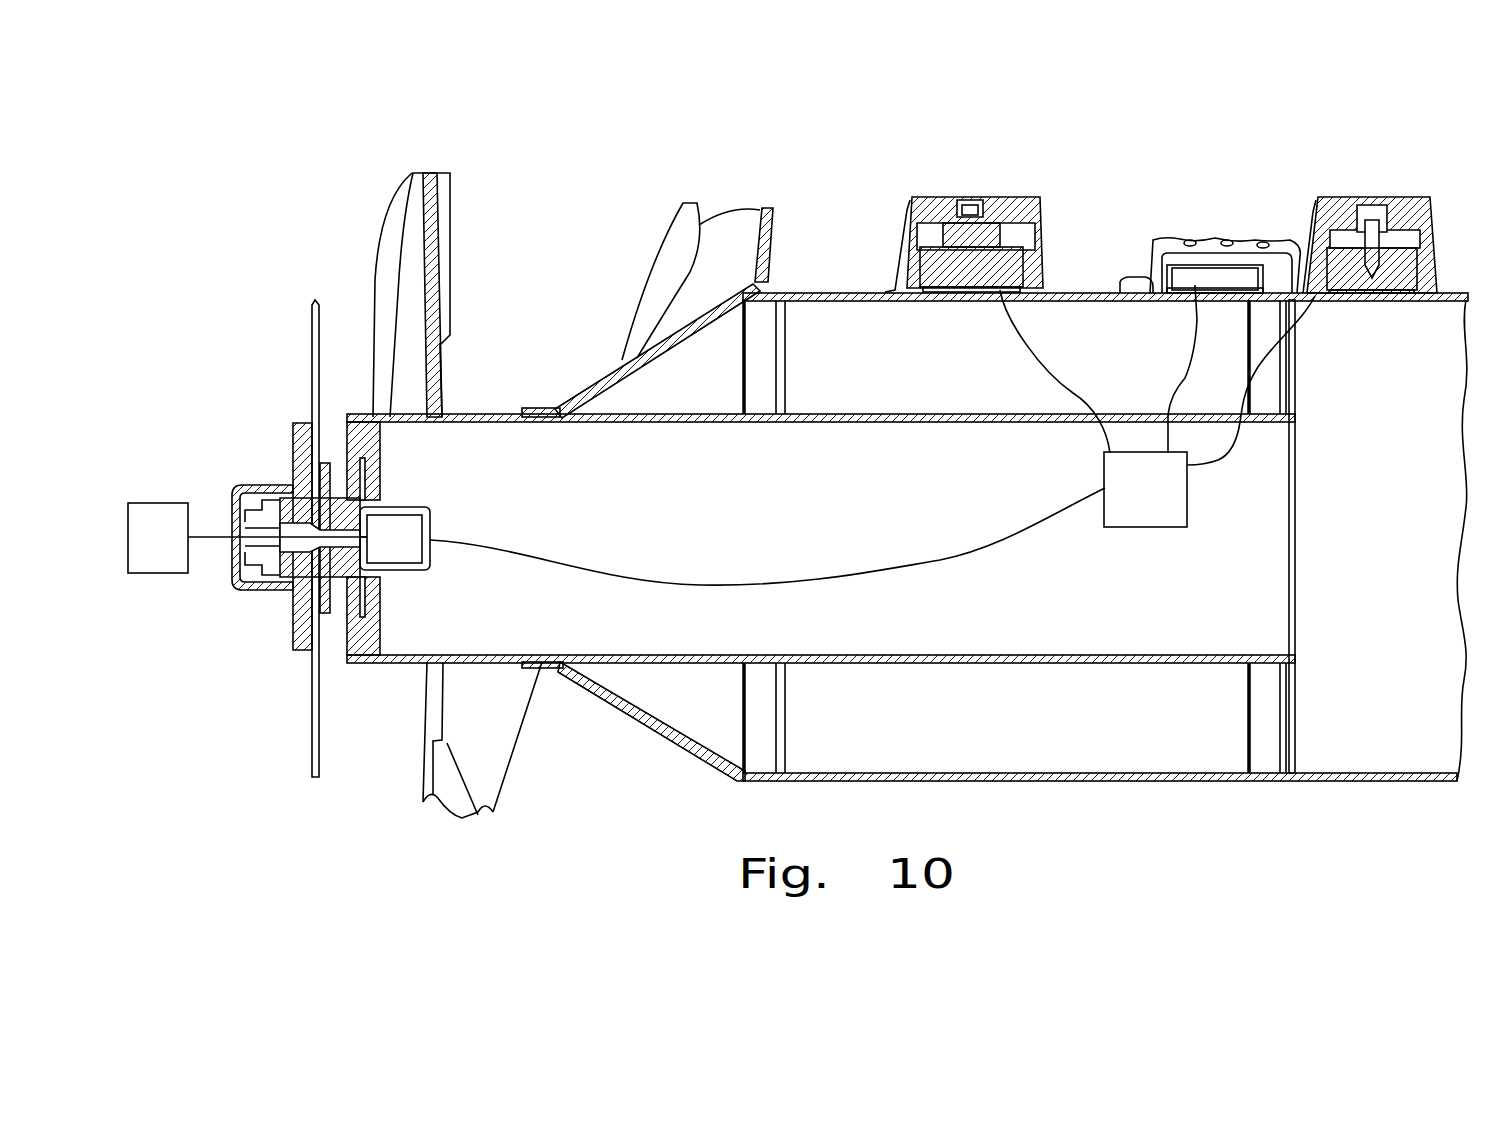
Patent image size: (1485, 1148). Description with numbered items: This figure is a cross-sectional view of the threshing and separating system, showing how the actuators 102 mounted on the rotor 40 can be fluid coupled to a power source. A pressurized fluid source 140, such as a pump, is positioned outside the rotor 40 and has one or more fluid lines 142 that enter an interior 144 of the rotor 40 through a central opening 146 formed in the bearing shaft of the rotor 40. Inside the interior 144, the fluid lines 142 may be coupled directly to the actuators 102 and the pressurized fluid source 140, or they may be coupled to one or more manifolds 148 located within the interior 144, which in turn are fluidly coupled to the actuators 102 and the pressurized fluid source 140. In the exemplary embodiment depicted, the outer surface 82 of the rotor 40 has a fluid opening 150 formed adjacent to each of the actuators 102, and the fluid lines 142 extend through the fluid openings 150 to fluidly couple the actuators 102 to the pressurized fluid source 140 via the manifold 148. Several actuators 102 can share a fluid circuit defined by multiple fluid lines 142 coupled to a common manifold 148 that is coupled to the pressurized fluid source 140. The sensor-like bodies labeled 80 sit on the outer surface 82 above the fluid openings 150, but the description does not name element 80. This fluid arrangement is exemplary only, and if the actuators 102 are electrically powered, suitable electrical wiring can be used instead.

The rotor 40 is at (777, 292).
The sensor 80 is at (975, 190).
The outer surface 82 is at (830, 293).
The actuator 102 is at (970, 277).
The pressurized fluid source 140 is at (158, 505).
The fluid line 142 is at (1037, 373).
The interior 144 is at (593, 425).
The central opening 146 is at (266, 540).
The manifold 148 is at (1153, 527).
The fluid opening 150 is at (1000, 290).